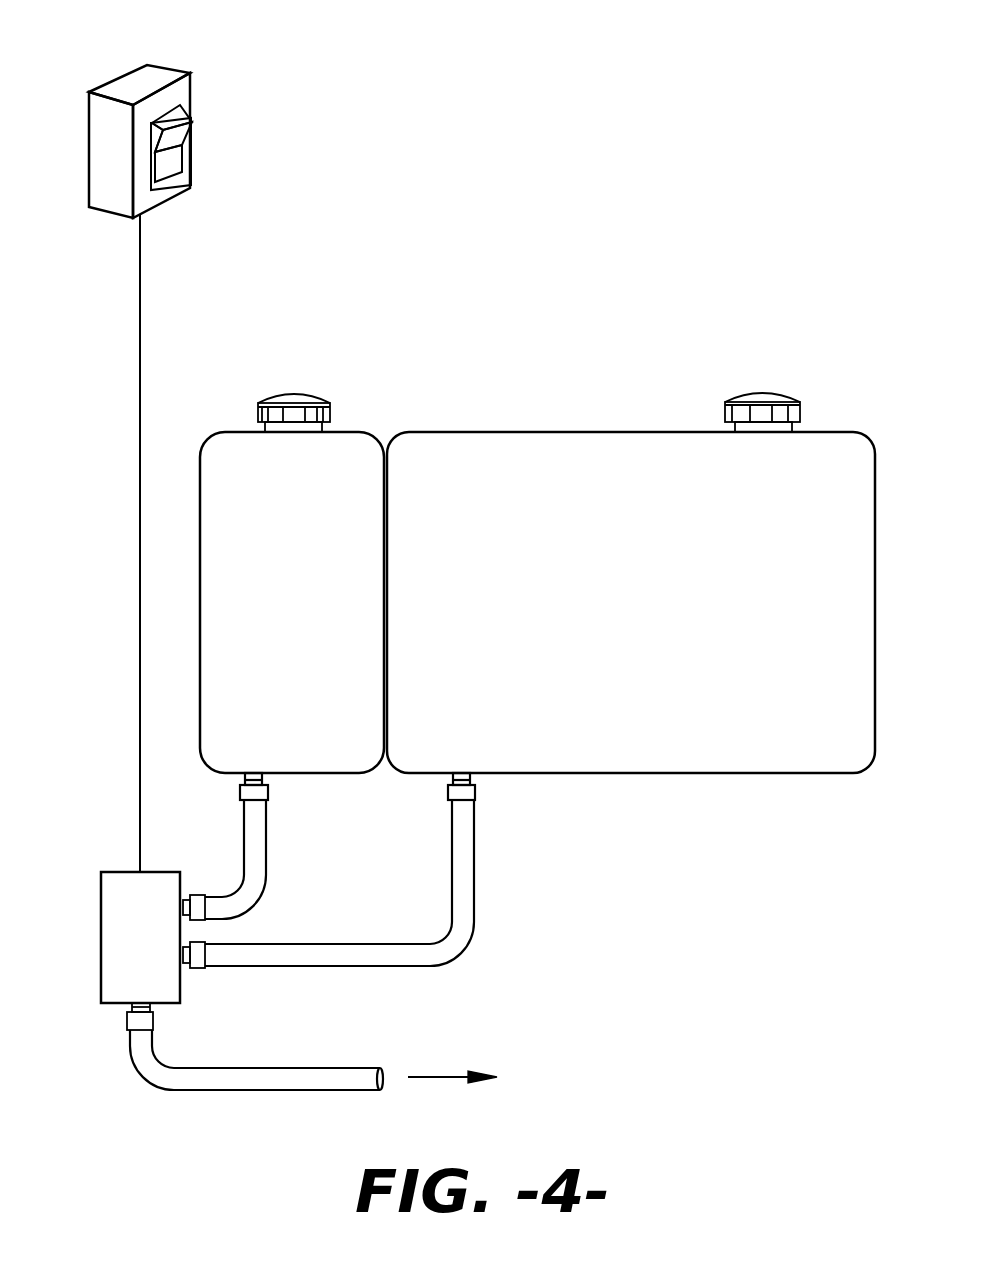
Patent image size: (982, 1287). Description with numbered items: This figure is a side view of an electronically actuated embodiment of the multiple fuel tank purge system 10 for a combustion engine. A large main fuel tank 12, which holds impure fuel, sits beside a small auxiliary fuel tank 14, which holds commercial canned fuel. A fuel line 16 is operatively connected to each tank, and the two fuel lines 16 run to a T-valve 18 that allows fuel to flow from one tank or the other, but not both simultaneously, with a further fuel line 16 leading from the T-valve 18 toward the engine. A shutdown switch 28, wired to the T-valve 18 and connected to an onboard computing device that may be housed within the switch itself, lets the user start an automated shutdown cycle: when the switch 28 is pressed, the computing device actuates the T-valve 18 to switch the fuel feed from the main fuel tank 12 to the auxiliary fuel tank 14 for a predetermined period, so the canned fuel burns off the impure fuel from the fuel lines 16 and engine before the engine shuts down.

The multiple fuel tank purge system 10 is at (628, 832).
The main fuel tank 12 is at (563, 465).
The auxiliary fuel tank 14 is at (240, 460).
The fuel line 16 is at (265, 875).
The T-valve 18 is at (117, 913).
The shutdown switch 28 is at (193, 92).